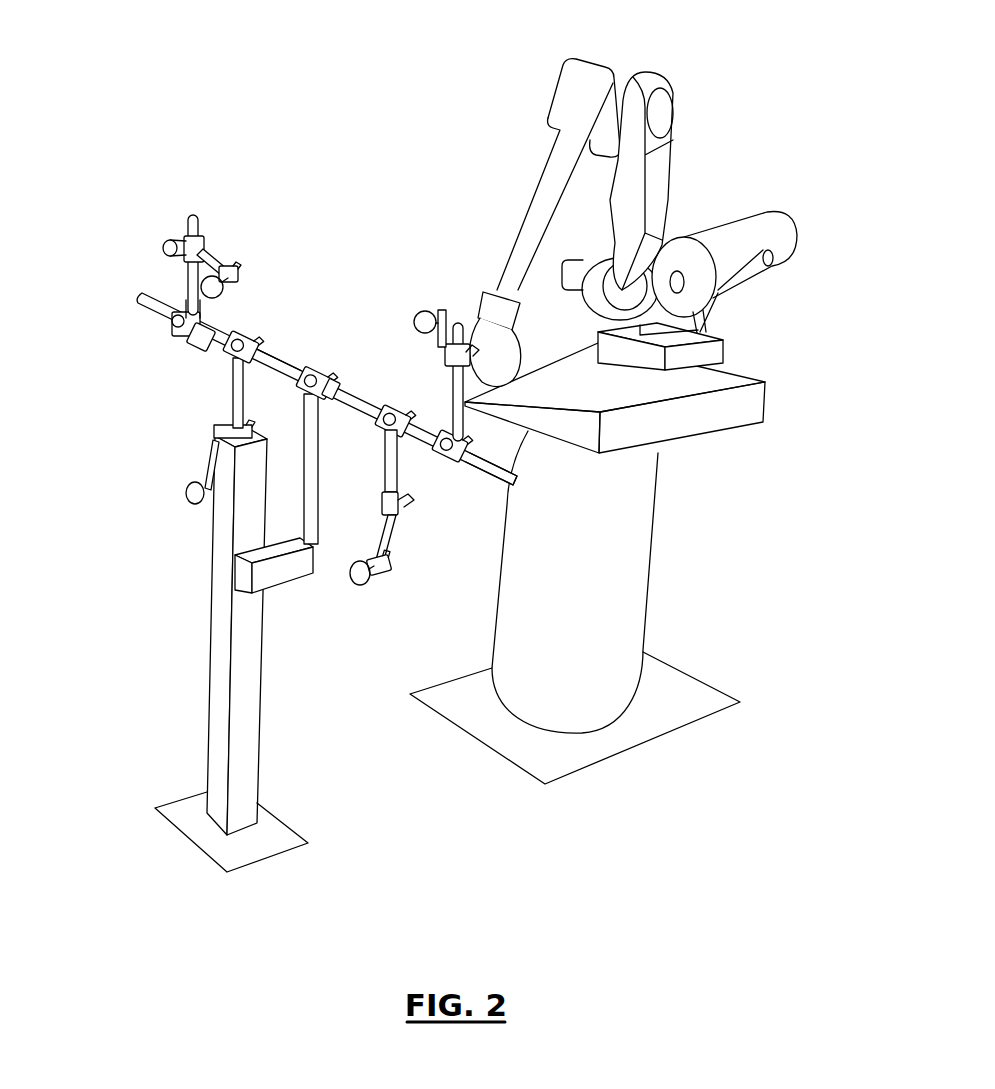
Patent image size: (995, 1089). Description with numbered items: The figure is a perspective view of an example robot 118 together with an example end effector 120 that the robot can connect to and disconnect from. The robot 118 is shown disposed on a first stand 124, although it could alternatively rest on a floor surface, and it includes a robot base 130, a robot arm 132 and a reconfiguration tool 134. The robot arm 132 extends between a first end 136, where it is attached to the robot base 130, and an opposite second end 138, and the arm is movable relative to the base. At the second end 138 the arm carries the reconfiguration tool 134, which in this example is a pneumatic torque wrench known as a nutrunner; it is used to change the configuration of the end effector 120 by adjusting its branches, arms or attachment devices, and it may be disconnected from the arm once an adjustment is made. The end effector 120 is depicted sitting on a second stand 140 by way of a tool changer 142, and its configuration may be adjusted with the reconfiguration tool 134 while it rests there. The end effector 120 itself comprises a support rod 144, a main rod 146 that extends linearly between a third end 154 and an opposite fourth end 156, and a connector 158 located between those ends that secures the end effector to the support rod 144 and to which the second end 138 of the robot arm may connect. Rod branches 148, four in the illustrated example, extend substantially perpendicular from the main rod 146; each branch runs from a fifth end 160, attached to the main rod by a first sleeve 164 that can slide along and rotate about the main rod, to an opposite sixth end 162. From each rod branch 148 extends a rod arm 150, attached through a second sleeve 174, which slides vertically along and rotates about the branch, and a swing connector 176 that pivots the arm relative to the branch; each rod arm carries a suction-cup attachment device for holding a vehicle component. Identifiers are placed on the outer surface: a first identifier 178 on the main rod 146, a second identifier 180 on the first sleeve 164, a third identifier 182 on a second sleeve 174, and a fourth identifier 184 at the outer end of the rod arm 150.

The robot 118 is at (815, 150).
The end effector 120 is at (323, 226).
The first stand 124 is at (636, 553).
The robot base 130 is at (698, 355).
The robot arm 132 is at (677, 92).
The reconfiguration tool 134 is at (455, 322).
The first end 136 is at (692, 320).
The second end 138 is at (484, 298).
The second stand 140 is at (222, 693).
The tool changer 142 is at (278, 580).
The support rod 144 is at (303, 462).
The main rod 146 is at (283, 362).
The rod branches 148 is at (230, 397).
The rod arm 150 is at (392, 540).
The third end 154 is at (500, 485).
The fourth end 156 is at (138, 302).
The connector 158 is at (337, 381).
The fifth end 160 is at (185, 318).
The sixth end 162 is at (188, 223).
The first sleeve 164 is at (195, 340).
The second sleeve 174 is at (203, 256).
The swing connector 176 is at (383, 513).
The first identifier 178 is at (323, 373).
The second identifier 180 is at (172, 328).
The third identifier 182 is at (163, 248).
The fourth identifier 184 is at (238, 272).